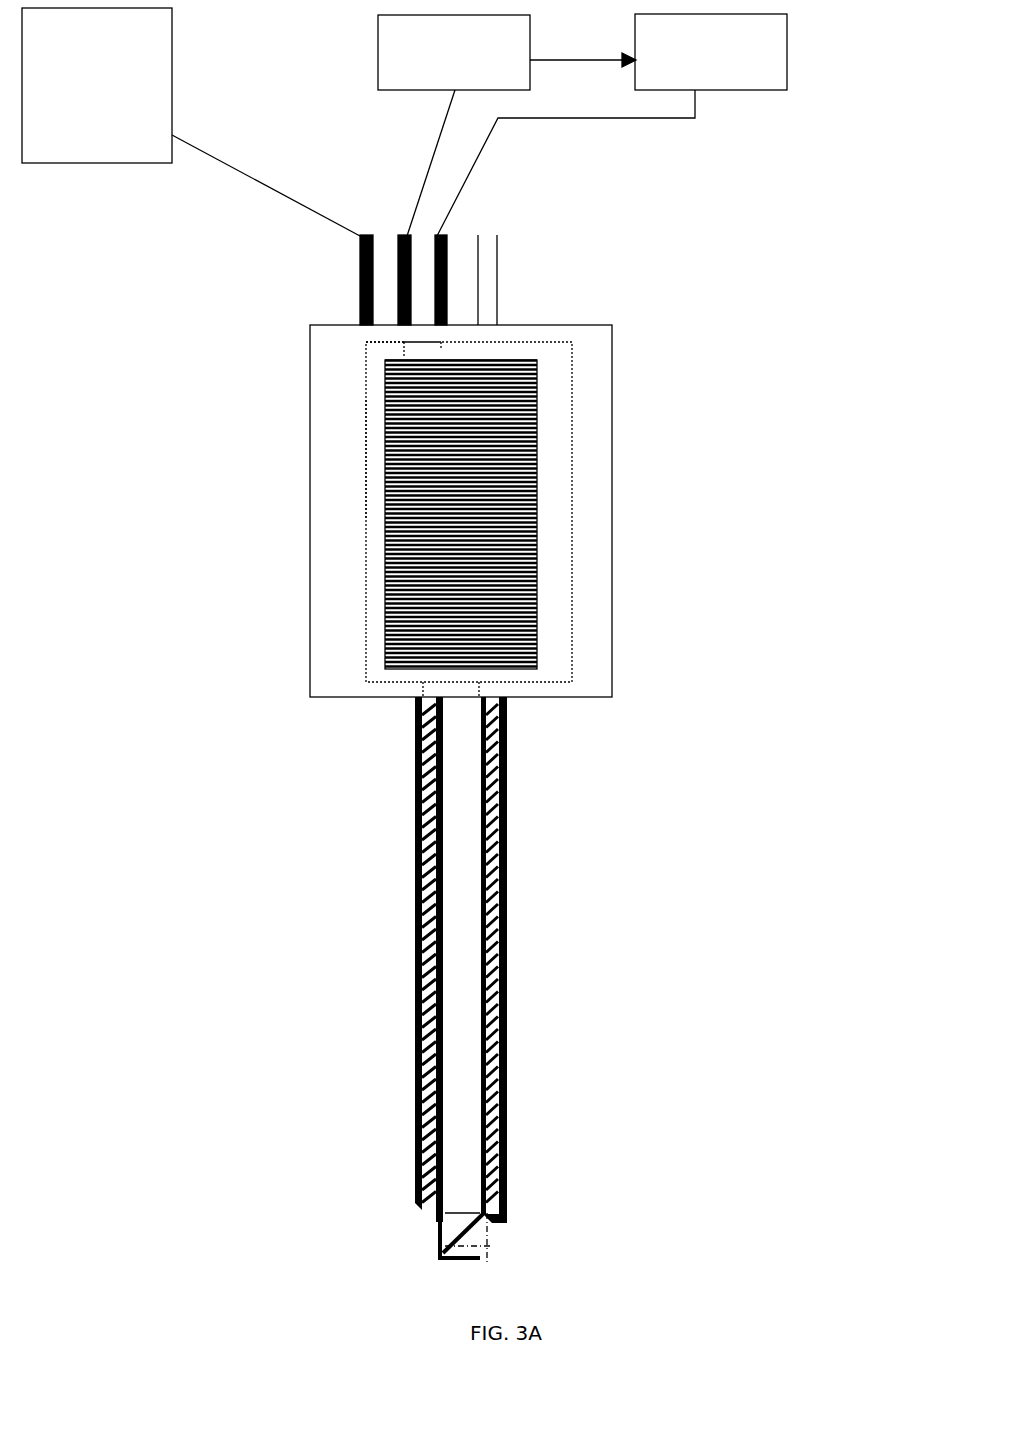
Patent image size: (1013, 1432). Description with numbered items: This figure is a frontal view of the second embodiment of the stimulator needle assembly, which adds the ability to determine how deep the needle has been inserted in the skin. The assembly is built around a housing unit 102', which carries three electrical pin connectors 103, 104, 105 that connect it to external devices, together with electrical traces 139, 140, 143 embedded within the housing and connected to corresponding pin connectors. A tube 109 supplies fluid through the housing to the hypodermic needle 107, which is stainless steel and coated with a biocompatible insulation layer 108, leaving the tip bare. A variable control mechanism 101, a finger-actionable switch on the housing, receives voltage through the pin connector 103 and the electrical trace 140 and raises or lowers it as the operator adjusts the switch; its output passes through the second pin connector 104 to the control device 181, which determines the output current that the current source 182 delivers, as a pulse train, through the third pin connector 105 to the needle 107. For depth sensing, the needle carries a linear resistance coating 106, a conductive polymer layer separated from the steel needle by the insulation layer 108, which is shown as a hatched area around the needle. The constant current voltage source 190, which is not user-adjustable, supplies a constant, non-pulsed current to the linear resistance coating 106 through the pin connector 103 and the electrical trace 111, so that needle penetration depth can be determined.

The variable control mechanism 101 is at (537, 388).
The housing unit 102' is at (556, 511).
The electrical pin connector 103 is at (360, 250).
The second electrical pin connector 104 is at (405, 235).
The third electrical pin connector 105 is at (441, 235).
The linear resistance coating 106 is at (507, 812).
The needle 107 is at (517, 1246).
The insulation layer 108 is at (424, 1228).
The tube 109 is at (497, 250).
The electrical trace 111 is at (366, 462).
The electrical trace 139 is at (572, 473).
The electrical trace 140 is at (385, 342).
The electrical trace 143 is at (403, 342).
The control device 181 is at (378, 43).
The current source 182 is at (787, 43).
The constant current voltage source 190 is at (35, 163).